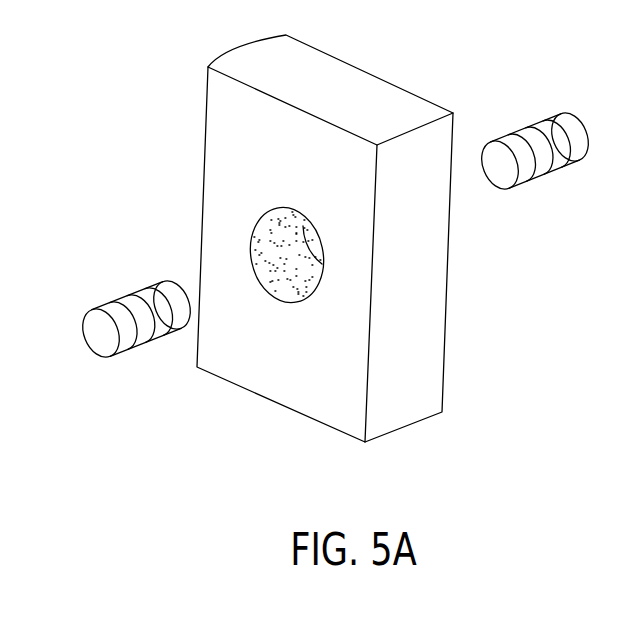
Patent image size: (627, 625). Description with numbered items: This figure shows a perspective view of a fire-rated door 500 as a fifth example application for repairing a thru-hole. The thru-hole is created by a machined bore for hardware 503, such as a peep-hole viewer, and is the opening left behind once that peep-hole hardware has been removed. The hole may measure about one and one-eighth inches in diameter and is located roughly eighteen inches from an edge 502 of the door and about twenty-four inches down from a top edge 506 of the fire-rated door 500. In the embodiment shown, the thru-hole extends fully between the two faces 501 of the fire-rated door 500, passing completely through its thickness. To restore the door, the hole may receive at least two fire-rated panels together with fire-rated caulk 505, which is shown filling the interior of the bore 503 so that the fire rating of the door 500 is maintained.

The fire-rated door 500 is at (324, 267).
The faces of the fire-rated door 501 is at (223, 167).
The edge of the fire-rated door 502 is at (425, 357).
The machined bore for hardware 503 is at (272, 232).
The fire-rated caulk 505 is at (278, 250).
The top edge of the fire-rated door 506 is at (355, 95).